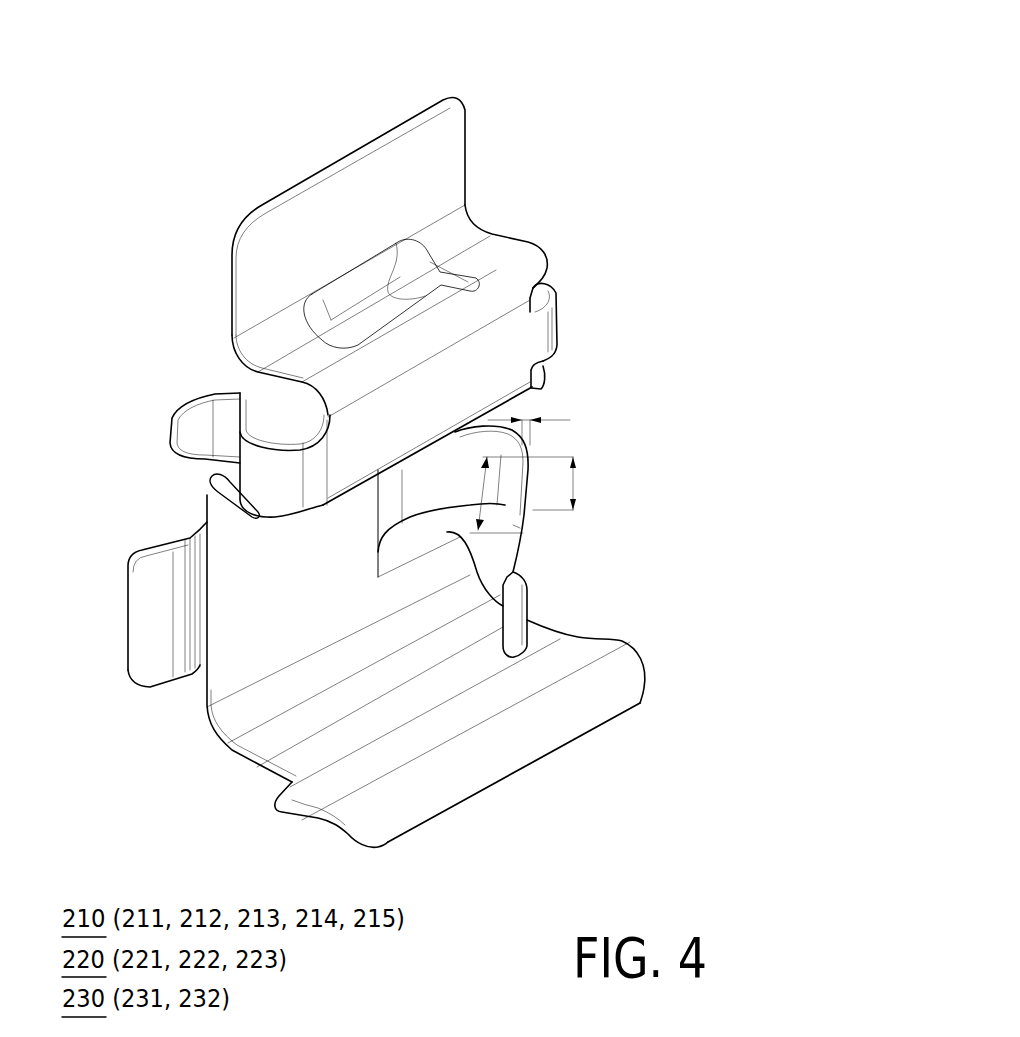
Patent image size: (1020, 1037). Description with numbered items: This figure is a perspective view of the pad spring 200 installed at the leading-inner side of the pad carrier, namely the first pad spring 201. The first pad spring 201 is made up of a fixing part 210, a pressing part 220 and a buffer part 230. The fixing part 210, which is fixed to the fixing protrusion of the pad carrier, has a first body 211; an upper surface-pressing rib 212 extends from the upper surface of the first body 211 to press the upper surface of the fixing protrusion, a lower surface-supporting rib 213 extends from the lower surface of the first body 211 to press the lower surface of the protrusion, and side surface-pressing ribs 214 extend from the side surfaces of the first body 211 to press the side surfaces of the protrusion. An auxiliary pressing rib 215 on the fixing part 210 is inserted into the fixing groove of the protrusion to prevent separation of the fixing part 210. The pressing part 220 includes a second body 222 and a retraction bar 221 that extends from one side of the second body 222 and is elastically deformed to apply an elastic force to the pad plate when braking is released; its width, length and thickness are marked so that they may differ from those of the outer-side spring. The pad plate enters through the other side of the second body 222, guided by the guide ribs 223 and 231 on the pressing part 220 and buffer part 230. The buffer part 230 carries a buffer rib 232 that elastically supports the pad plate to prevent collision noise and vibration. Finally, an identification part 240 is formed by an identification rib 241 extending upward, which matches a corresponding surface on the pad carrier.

The pad spring 200 is at (353, 472).
The first pad spring 201 is at (558, 128).
The fixing part 210 is at (382, 297).
The first body 211 is at (480, 357).
The upper surface-pressing rib 212 is at (500, 250).
The lower surface-supporting rib 213 is at (293, 430).
The side surface-pressing rib 214 is at (551, 288).
The auxiliary pressing rib 215 is at (412, 295).
The pressing part 220 is at (340, 587).
The retraction bar 221 is at (523, 542).
The second body 222 is at (233, 663).
The guide rib 223 is at (147, 618).
The buffer part 230 is at (438, 727).
The guide rib 231 is at (297, 797).
The buffer rib 232 is at (543, 670).
The identification part 240 is at (348, 206).
The identification rib 241 is at (333, 193).